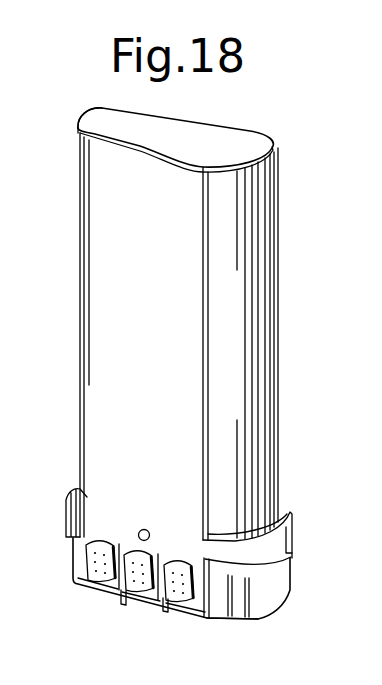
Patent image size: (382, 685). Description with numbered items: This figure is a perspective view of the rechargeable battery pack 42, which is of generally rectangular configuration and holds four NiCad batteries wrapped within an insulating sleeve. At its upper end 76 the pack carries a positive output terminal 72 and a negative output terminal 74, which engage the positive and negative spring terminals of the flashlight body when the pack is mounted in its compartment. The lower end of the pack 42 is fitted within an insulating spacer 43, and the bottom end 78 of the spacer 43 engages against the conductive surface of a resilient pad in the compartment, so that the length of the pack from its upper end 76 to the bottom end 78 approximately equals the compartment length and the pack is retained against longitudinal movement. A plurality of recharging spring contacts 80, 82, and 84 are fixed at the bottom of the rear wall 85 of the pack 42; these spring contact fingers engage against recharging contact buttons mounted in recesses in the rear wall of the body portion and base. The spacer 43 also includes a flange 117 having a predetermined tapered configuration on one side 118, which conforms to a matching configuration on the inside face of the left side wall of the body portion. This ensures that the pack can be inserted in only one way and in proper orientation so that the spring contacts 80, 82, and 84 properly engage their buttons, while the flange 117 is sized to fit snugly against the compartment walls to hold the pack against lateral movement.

The battery pack 42 is at (258, 358).
The insulating spacer 43 is at (277, 580).
The positive output terminal 72 is at (214, 141).
The negative output terminal 74 is at (133, 128).
The upper end 76 is at (100, 128).
The bottom end 78 is at (272, 612).
The recharging spring contact 80 is at (90, 573).
The recharging spring contact 82 is at (133, 586).
The recharging spring contact 84 is at (173, 592).
The rear wall 85 is at (158, 331).
The flange 117 is at (70, 497).
The tapered side 118 is at (290, 528).